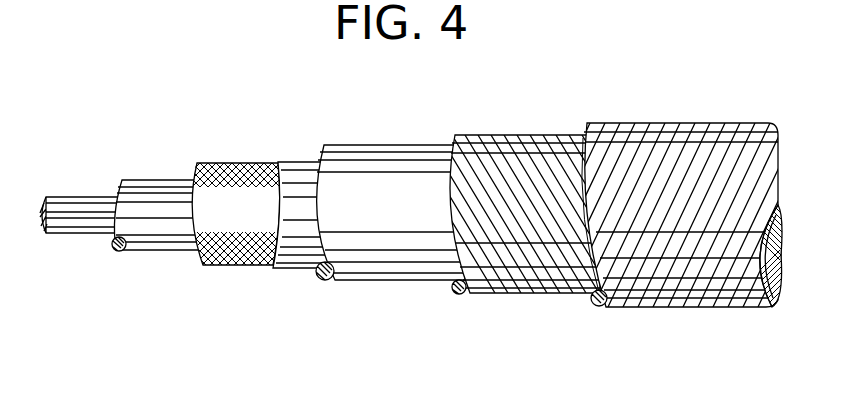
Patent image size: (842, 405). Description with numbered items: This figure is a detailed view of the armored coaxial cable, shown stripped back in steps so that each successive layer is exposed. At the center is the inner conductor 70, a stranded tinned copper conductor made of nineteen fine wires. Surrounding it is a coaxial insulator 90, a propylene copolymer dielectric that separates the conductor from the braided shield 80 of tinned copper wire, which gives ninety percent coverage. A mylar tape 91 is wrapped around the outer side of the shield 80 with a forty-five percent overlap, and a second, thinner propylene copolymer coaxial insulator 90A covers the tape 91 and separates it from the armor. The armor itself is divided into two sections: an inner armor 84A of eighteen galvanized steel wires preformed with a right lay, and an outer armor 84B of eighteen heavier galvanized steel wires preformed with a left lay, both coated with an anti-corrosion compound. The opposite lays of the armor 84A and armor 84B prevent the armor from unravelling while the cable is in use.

The inner conductor 70 is at (79, 222).
The coaxial insulator 90 is at (153, 192).
The shield 80 is at (225, 228).
The mylar tape 91 is at (302, 243).
The coaxial insulator 90A is at (405, 172).
The armor 84A is at (547, 257).
The armor 84B is at (688, 157).